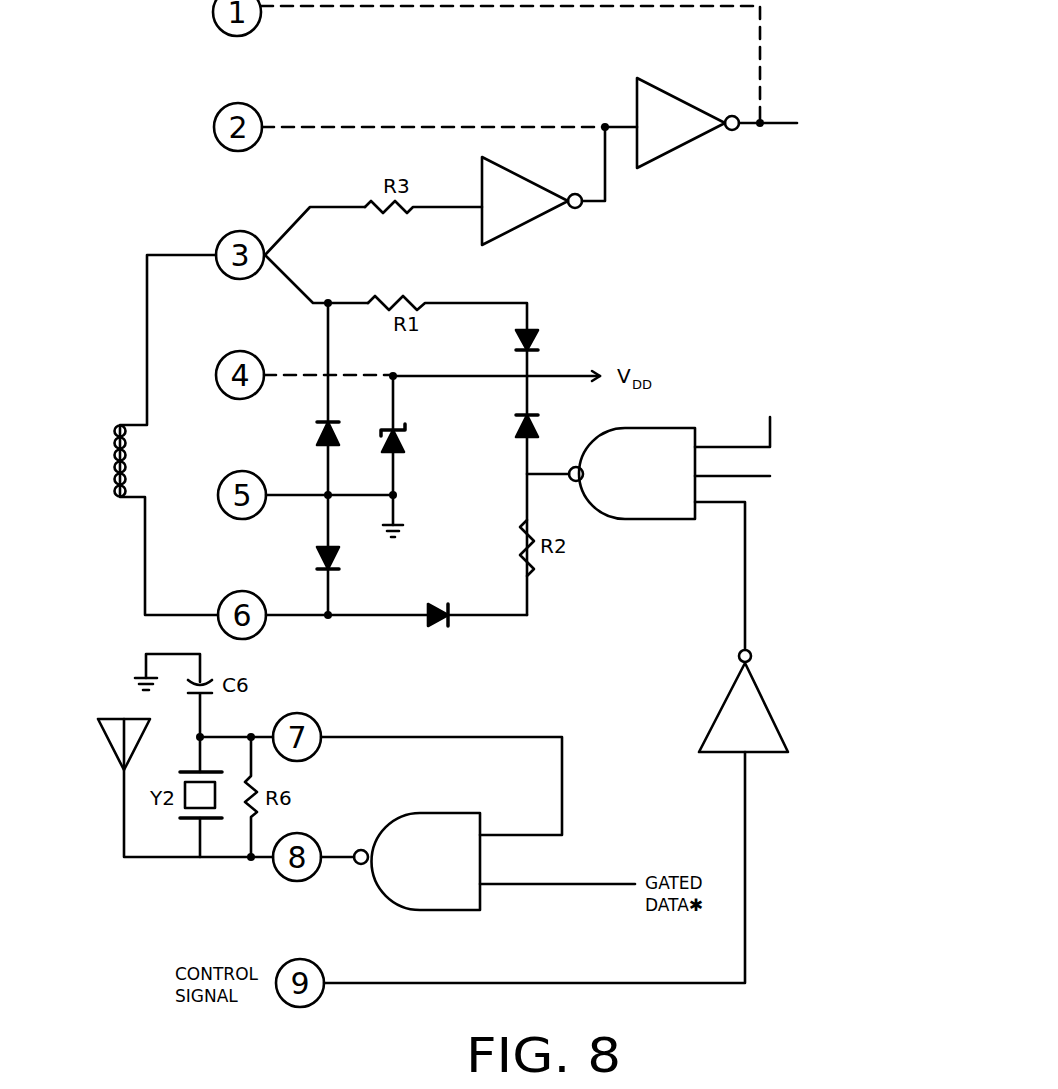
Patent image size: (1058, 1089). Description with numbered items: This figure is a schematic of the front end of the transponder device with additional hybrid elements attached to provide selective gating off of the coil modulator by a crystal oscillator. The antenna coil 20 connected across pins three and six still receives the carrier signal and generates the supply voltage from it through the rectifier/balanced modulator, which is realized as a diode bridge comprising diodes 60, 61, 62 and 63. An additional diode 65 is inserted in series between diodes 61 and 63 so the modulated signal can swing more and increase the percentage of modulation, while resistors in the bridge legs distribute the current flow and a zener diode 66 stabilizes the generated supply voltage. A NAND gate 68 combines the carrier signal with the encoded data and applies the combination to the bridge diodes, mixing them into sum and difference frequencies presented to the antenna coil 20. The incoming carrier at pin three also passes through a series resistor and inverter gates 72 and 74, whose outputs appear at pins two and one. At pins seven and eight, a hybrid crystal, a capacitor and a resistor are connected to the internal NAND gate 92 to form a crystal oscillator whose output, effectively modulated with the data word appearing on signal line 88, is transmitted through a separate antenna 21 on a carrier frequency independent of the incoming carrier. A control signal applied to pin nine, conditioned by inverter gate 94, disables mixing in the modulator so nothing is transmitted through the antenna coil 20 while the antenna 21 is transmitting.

The antenna coil 20 is at (116, 488).
The antenna 21 is at (108, 745).
The diode 60 is at (316, 440).
The diode 61 is at (339, 556).
The diode 62 is at (546, 338).
The diode 63 is at (539, 433).
The additional diode 65 is at (437, 628).
The zener diode 66 is at (405, 441).
The NAND gate 68 is at (631, 519).
The inverter gate 72 is at (527, 222).
The inverter gate 74 is at (672, 150).
The signal line 88 is at (556, 884).
The NAND gate 92 is at (441, 910).
The inverter gate 94 is at (716, 716).